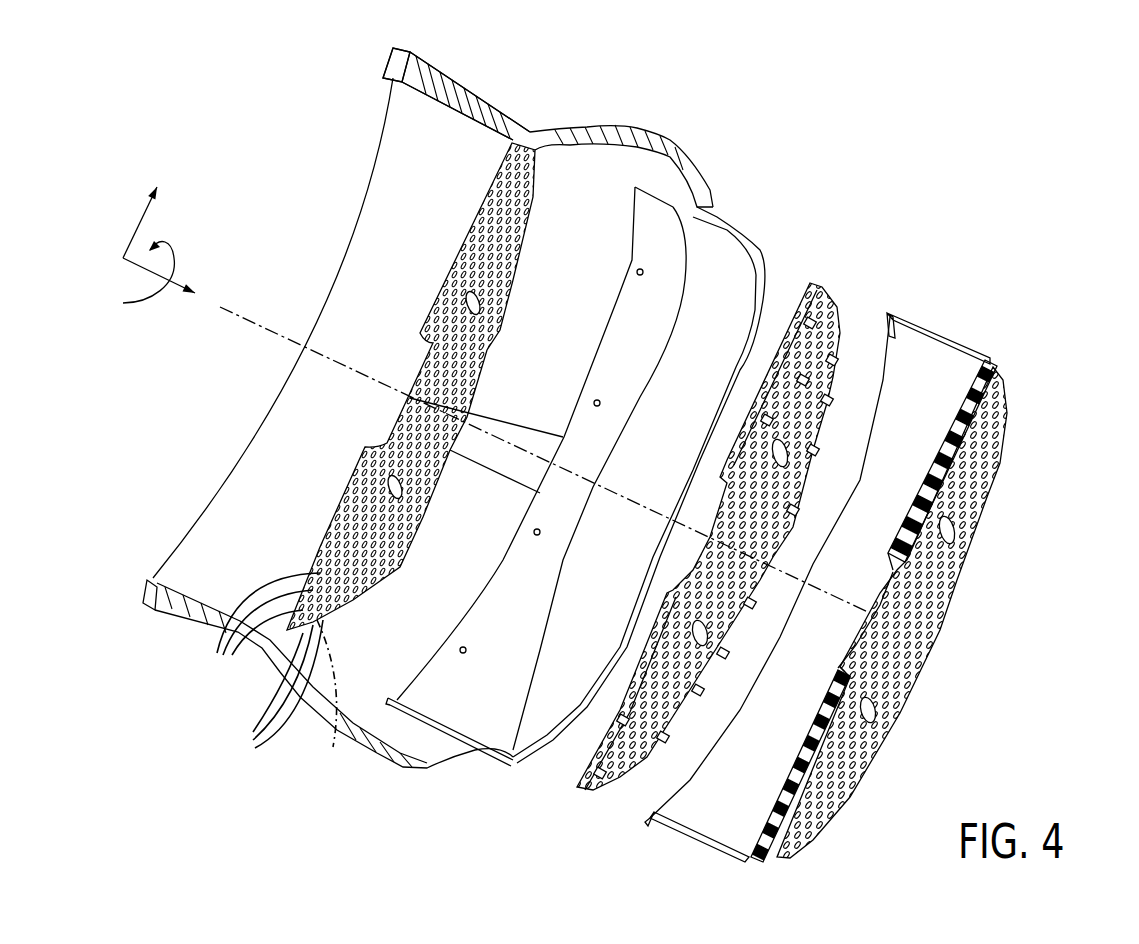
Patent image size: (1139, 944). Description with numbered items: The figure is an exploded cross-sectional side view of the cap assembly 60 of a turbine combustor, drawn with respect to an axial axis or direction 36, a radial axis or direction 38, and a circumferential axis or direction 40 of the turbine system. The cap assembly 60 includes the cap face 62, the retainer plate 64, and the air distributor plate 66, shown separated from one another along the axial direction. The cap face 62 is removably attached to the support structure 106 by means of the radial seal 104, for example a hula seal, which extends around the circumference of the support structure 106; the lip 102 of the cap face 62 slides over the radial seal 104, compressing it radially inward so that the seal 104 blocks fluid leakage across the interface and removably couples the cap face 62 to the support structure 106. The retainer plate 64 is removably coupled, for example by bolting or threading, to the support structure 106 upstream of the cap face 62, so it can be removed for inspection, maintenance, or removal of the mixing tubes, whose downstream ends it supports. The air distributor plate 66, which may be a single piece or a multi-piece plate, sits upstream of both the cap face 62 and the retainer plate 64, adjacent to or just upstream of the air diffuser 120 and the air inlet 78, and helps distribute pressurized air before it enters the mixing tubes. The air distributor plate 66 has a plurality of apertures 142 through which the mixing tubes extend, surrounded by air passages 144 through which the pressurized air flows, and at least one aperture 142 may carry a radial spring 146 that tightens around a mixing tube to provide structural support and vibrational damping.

The axial axis or direction 36 is at (152, 298).
The radial axis or direction 38 is at (137, 227).
The circumferential axis or direction 40 is at (175, 261).
The cap assembly 60 is at (875, 139).
The cap face 62 is at (1007, 405).
The retainer plate 64 is at (830, 290).
The air distributor plate 66 is at (530, 158).
The air inlet 78 is at (597, 177).
The lip 102 is at (937, 335).
The radial seal 104 is at (727, 217).
The support structure 106 is at (447, 88).
The air diffuser 120 is at (660, 140).
The apertures 142 is at (261, 630).
The air passages 144 is at (268, 690).
The radial spring 146 is at (331, 702).